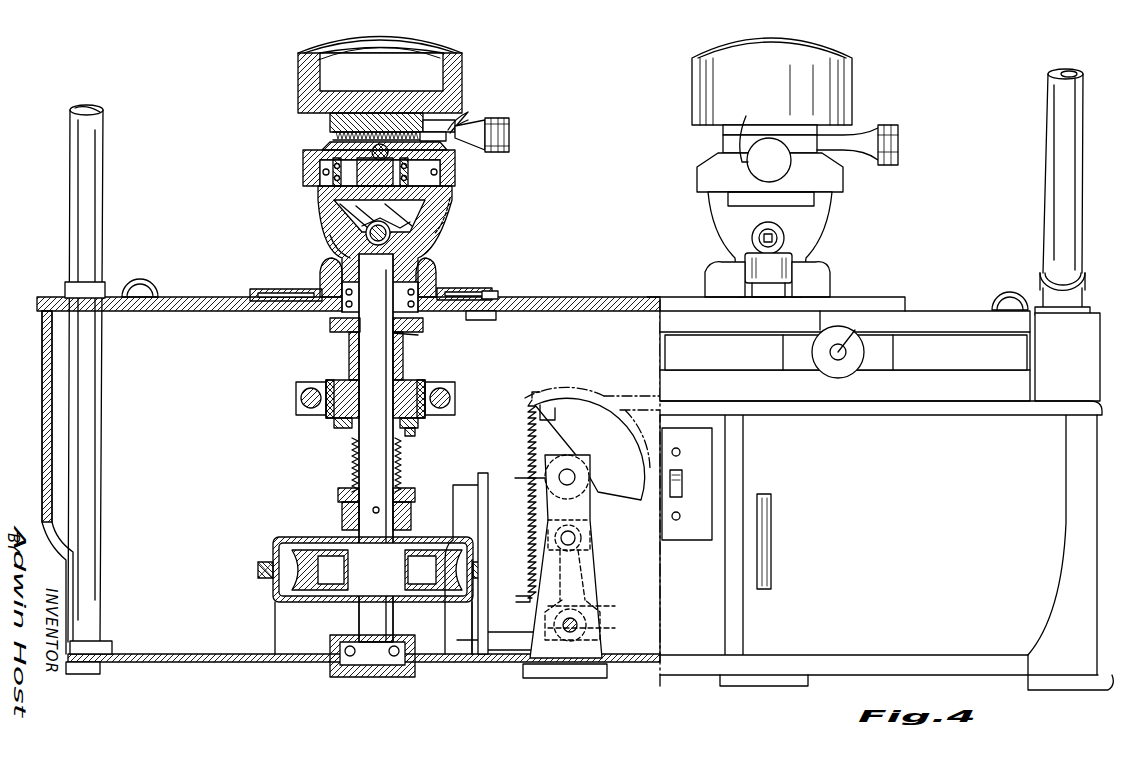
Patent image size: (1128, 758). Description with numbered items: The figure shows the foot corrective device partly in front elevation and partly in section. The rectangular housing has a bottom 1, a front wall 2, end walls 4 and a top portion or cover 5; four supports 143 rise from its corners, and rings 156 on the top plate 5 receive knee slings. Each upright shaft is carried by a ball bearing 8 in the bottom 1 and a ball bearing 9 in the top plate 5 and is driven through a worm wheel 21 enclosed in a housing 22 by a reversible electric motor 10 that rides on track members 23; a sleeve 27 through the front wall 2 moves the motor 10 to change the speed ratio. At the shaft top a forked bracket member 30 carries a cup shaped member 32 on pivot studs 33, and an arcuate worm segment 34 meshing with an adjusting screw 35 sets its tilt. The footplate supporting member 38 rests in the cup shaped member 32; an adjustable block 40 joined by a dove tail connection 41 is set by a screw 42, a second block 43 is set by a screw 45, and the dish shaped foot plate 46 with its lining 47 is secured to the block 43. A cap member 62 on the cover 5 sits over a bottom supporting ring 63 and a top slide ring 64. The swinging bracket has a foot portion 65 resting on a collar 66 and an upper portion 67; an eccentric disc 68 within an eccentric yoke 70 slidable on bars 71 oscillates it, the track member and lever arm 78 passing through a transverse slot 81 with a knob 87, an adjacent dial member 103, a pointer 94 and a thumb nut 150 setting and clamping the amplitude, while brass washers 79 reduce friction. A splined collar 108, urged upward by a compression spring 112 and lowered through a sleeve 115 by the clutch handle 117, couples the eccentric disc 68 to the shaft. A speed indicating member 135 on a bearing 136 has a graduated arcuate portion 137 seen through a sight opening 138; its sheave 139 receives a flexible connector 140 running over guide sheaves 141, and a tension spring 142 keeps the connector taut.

The bottom 1 is at (170, 662).
The front wall 2 is at (1058, 530).
The end wall 4 is at (40, 386).
The top portion or cover 5 is at (155, 312).
The ball bearing 8 is at (330, 650).
The ball bearing 9 is at (440, 290).
The reversible electric motor 10 is at (468, 484).
The worm wheel 21 is at (290, 562).
The housing 22 is at (292, 536).
The track member 23 is at (502, 664).
The sleeve 27 is at (582, 540).
The forked bracket member 30 is at (326, 224).
The cup shaped member 32 is at (442, 204).
The pivot stud 33 is at (452, 132).
The arcuate worm segment 34 is at (332, 236).
The adjusting screw 35 is at (392, 235).
The footplate supporting member 38 is at (304, 168).
The adjustable block 40 is at (330, 146).
The dove tail connection 41 is at (743, 130).
The screw 42 is at (769, 150).
The block 43 is at (330, 124).
The screw 45 is at (500, 136).
The dish shaped foot plate 46 is at (458, 62).
The lining 47 is at (440, 50).
The cap member 62 is at (420, 270).
The bottom supporting ring 63 is at (480, 320).
The top slide ring 64 is at (490, 291).
The foot portion 65 is at (338, 496).
The collar 66 is at (342, 516).
The upper portion 67 is at (349, 348).
The eccentric disc 68 is at (418, 384).
The eccentric yoke 70 is at (330, 420).
The bar 71 is at (311, 394).
The track member and lever arm 78 is at (424, 325).
The brass washer 79 is at (416, 338).
The transverse slot 81 is at (940, 338).
The knob 87 is at (866, 352).
The pointer 94 is at (826, 326).
The dial wheel 103 is at (846, 342).
The collar 108 is at (350, 444).
The compression spring 112 is at (350, 472).
The sleeve 115 is at (420, 420).
The clutch handle 117 is at (766, 550).
The speed indicating member 135 is at (625, 448).
The bearing 136 is at (560, 470).
The graduated arcuate portion 137 is at (628, 422).
The sight opening 138 is at (578, 392).
The sheave 139 is at (528, 480).
The flexible connector 140 is at (600, 606).
The guide sheave 141 is at (600, 628).
The tension spring 142 is at (532, 436).
The support 143 is at (76, 166).
The thumb nut 150 is at (796, 266).
The ring 156 is at (145, 284).